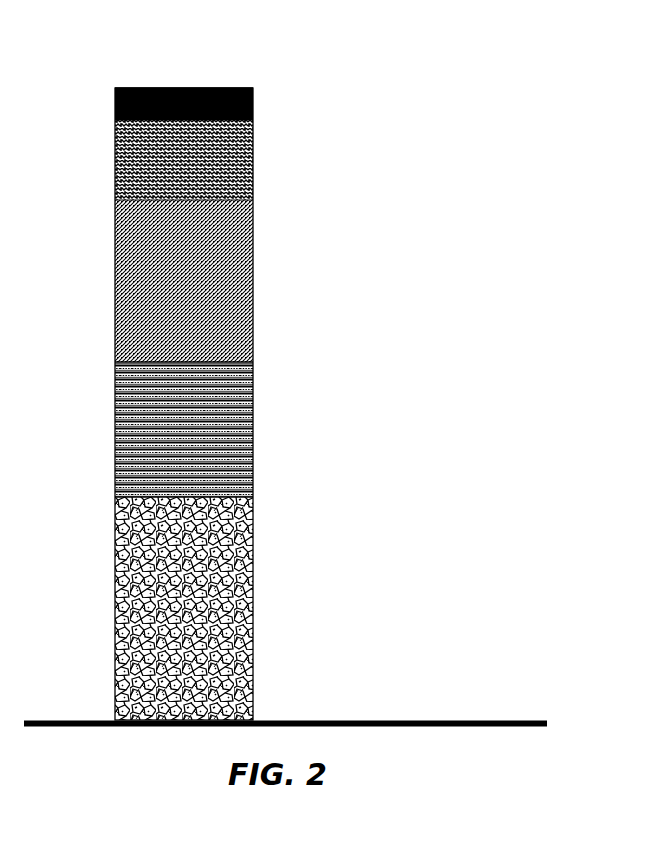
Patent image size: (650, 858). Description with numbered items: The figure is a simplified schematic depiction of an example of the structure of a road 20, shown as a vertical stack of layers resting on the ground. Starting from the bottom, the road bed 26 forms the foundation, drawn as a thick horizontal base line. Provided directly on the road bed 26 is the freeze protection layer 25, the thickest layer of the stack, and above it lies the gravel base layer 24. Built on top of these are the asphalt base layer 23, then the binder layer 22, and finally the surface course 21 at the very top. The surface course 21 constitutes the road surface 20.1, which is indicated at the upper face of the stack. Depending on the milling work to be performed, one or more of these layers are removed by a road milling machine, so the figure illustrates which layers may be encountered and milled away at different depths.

The road 20 is at (345, 404).
The road surface 20.1 is at (190, 88).
The surface course 21 is at (253, 104).
The binder layer 22 is at (253, 150).
The asphalt base layer 23 is at (240, 233).
The gravel base layer 24 is at (243, 385).
The freeze protection layer 25 is at (243, 535).
The road bed 26 is at (314, 720).